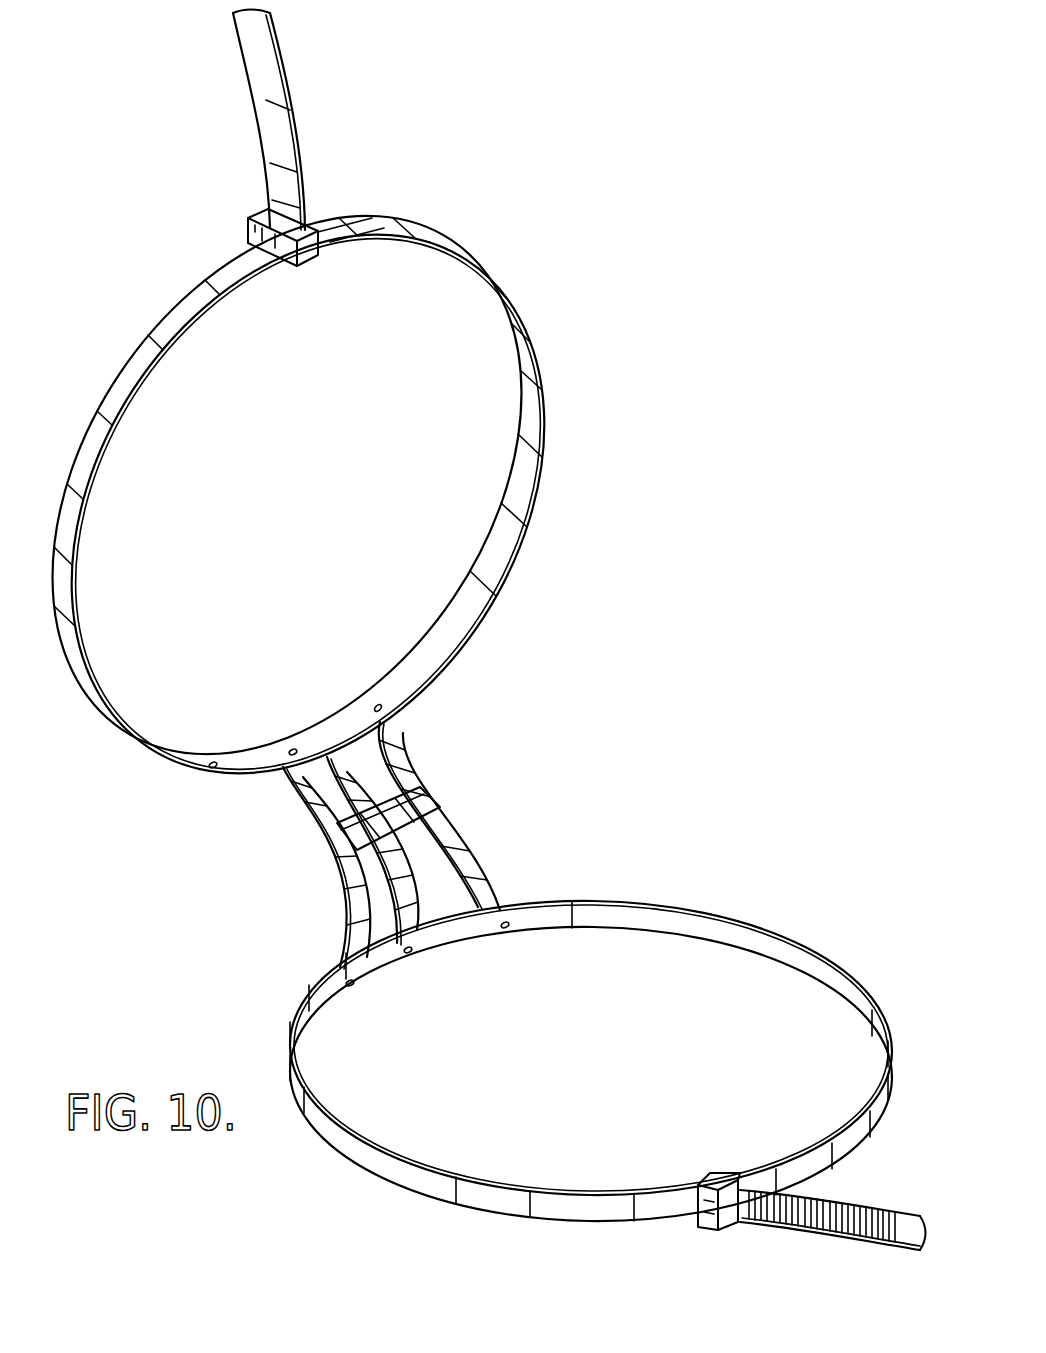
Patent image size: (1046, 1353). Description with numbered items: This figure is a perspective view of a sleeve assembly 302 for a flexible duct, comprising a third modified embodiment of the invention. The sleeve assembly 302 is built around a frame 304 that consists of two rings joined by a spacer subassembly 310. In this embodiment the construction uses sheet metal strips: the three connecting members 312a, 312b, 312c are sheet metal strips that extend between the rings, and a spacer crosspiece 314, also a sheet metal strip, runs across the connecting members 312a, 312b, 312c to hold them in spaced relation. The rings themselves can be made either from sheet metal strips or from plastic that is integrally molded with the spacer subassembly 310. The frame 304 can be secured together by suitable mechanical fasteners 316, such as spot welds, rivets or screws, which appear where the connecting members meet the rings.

The sleeve assembly 302 is at (590, 325).
The frame 304 is at (196, 297).
The spacer subassembly 310 is at (428, 778).
The connecting member 312a is at (413, 855).
The connecting member 312b is at (347, 882).
The connecting member 312c is at (483, 903).
The spacer crosspiece 314 is at (440, 805).
The mechanical fasteners 316 is at (376, 706).